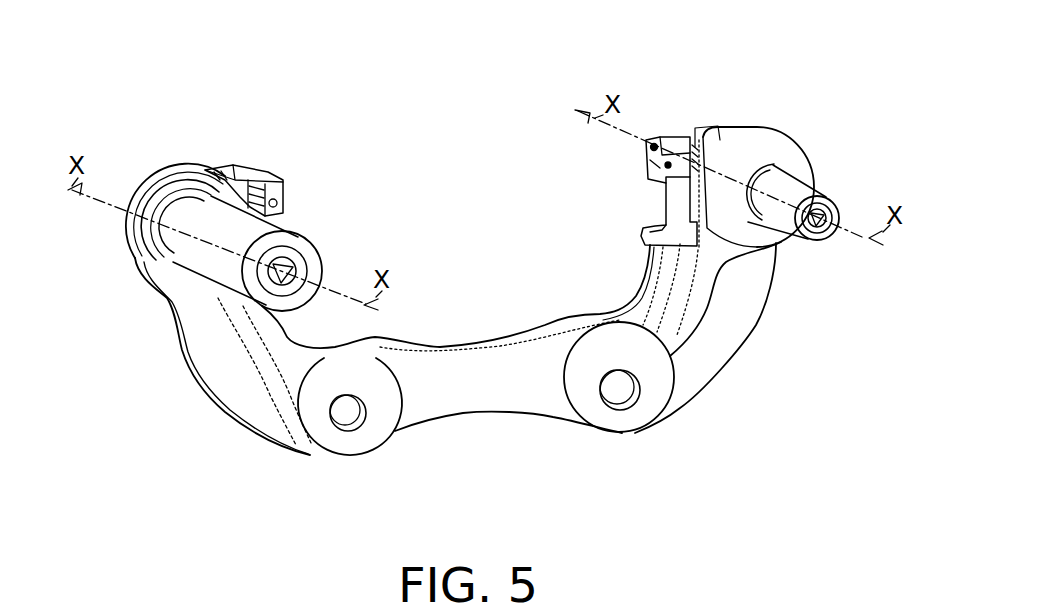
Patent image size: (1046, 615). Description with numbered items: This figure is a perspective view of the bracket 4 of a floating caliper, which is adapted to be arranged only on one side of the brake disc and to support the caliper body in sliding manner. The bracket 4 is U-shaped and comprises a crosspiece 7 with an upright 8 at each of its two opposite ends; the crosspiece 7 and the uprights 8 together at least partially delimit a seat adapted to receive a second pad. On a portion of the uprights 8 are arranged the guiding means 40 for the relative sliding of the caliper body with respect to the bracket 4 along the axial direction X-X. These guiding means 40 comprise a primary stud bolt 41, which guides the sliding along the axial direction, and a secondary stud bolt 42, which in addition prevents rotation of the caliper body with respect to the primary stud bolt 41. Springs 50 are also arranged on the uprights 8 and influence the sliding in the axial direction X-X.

The bracket 4 is at (786, 114).
The crosspiece 7 is at (480, 400).
The upright 8 is at (213, 350).
The guiding means 40 is at (535, 193).
The primary stud bolt 41 is at (217, 220).
The secondary stud bolt 42 is at (800, 190).
The springs 50 is at (287, 198).